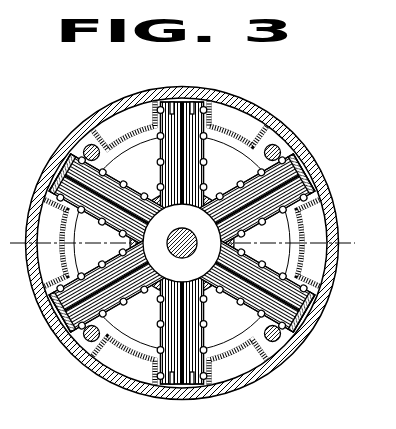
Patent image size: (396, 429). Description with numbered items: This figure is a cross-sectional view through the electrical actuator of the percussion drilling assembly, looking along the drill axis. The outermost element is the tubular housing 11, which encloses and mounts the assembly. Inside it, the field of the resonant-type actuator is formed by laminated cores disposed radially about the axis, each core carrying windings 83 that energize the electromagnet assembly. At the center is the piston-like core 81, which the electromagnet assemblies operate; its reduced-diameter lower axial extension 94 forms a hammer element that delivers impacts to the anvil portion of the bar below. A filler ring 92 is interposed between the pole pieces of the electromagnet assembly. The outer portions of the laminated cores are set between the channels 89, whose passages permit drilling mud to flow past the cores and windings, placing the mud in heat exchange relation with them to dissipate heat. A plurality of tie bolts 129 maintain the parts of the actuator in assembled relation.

The tubular housing 11 is at (264, 115).
The channels 89 is at (231, 127).
The tie bolts 129 is at (279, 146).
The lower axial extension 94 is at (243, 243).
The windings 83 is at (232, 290).
The central piston-like core 81 is at (197, 212).
The filler ring 92 is at (144, 247).